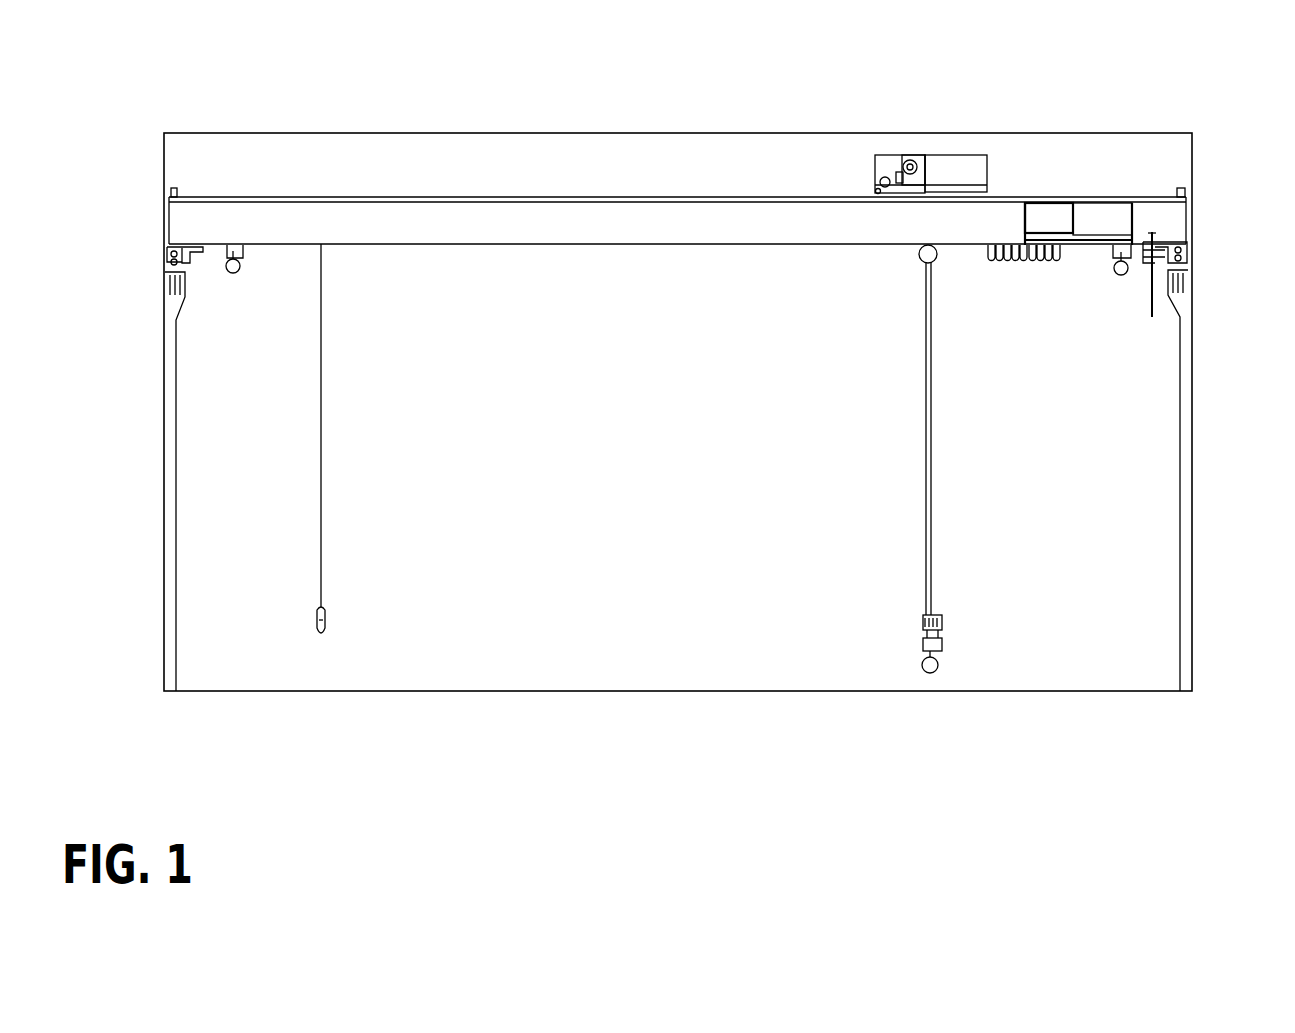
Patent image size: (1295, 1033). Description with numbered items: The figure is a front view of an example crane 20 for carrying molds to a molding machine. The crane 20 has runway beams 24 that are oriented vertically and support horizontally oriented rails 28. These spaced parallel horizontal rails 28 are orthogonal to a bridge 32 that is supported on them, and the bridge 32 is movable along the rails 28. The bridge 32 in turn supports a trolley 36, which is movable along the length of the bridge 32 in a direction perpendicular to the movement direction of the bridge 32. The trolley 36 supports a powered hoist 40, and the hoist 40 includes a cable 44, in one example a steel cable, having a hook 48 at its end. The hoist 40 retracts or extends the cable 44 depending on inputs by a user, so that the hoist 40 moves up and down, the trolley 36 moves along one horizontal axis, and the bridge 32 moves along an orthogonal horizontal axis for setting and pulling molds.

The crane 20 is at (637, 118).
The runway beams 24 is at (168, 454).
The rails 28 is at (165, 285).
The bridge 32 is at (395, 217).
The trolley 36 is at (964, 148).
The powered hoist 40 is at (923, 148).
The cable 44 is at (930, 445).
The hook 48 is at (922, 665).